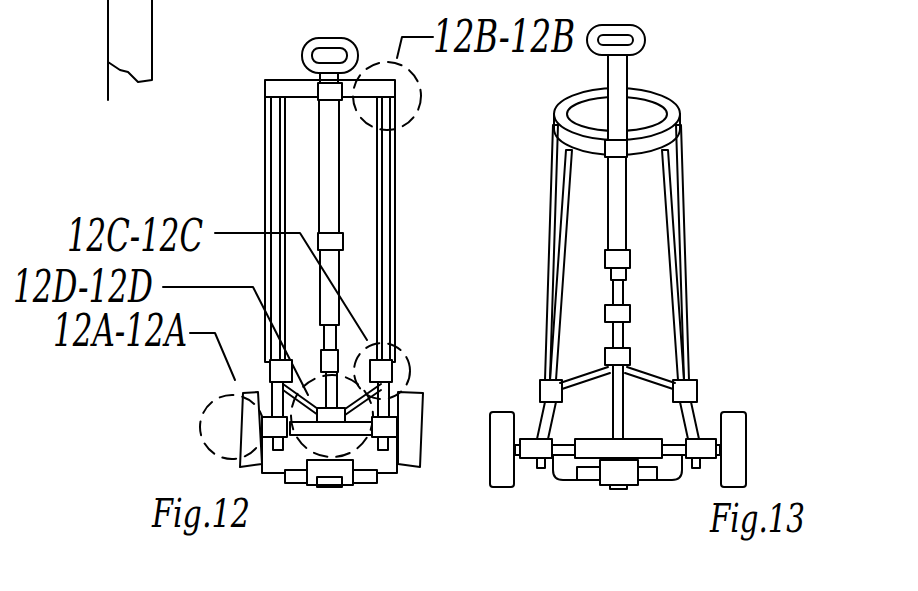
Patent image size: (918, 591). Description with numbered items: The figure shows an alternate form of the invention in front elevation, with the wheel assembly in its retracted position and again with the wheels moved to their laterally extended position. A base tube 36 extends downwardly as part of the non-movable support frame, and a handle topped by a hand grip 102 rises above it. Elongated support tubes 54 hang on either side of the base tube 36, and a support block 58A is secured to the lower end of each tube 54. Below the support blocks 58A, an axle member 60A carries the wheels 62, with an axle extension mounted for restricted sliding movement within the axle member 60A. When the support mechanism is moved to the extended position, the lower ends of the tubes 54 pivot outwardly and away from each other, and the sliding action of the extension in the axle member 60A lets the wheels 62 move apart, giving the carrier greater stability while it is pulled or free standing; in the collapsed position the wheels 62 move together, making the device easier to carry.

In FIG. 13, the base tube 36 is at (618, 408).
In FIG. 12, the support tubes 54 is at (278, 176).
In FIG. 13, the support tubes 54 is at (563, 218).
In FIG. 12, the support block 58A is at (272, 437).
In FIG. 13, the support block 58A is at (533, 445).
In FIG. 12, the axle member 60A is at (343, 432).
In FIG. 13, the axle member 60A is at (588, 448).
In FIG. 12, the wheels 62 is at (245, 394).
In FIG. 13, the wheels 62 is at (490, 419).
In FIG. 12, the hand grip 102 is at (317, 38).
In FIG. 13, the hand grip 102 is at (635, 27).